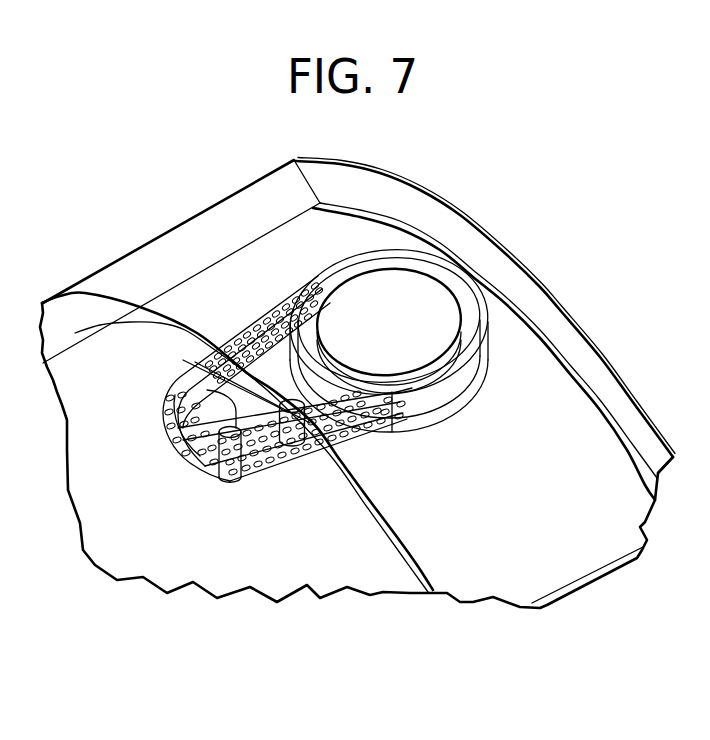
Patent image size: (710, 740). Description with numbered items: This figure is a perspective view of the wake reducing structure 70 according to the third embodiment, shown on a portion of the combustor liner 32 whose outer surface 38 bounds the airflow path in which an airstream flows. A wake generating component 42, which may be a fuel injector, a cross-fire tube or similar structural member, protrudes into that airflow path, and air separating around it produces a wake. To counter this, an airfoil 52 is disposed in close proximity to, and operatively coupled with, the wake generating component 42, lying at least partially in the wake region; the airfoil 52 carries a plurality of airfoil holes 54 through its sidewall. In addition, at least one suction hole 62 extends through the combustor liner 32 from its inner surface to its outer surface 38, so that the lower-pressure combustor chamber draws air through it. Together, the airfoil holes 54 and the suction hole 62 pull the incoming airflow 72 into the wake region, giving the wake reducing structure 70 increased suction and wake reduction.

The combustor liner 32 is at (190, 250).
The outer surface 38 is at (264, 560).
The wake generating component 42 is at (483, 291).
The airfoil 52 is at (397, 440).
The airfoil holes 54 is at (297, 459).
The suction hole 62 is at (232, 414).
The wake reducing structure 70 is at (196, 477).
The incoming airflow 72 is at (500, 321).